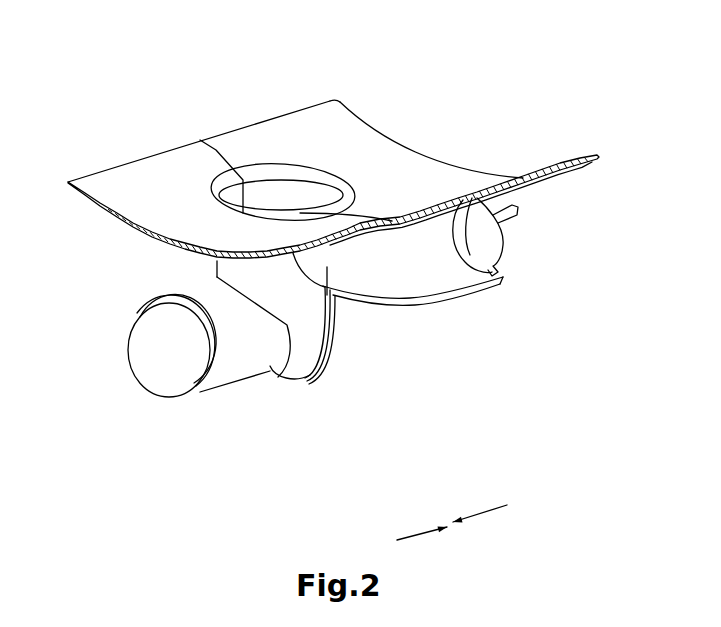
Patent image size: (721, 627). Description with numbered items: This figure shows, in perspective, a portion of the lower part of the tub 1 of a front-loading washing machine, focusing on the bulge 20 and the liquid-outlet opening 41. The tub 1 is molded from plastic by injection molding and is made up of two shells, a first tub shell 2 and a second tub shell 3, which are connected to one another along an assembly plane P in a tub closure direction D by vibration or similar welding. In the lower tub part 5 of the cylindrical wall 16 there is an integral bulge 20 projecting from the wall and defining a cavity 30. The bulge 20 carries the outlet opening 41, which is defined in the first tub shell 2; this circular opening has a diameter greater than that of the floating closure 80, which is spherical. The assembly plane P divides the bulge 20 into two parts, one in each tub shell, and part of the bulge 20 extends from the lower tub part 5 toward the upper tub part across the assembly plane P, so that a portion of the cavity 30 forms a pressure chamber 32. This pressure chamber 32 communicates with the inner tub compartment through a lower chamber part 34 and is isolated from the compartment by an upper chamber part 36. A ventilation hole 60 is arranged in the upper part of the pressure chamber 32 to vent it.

The tub 1 is at (100, 247).
The first tub shell 2 is at (170, 160).
The second tub shell 3 is at (318, 113).
The lower tub part 5 is at (376, 165).
The cylindrical wall 16 is at (118, 170).
The cavity 30 is at (289, 205).
The assembly plane P is at (216, 150).
The bulge 20 is at (303, 352).
The floating closure 80 is at (157, 365).
The outlet opening 41 is at (165, 294).
The pressure chamber 32 is at (400, 265).
The lower chamber part 34 is at (335, 298).
The upper chamber part 36 is at (466, 240).
The ventilation hole 60 is at (518, 212).
The tub closure direction D is at (452, 521).